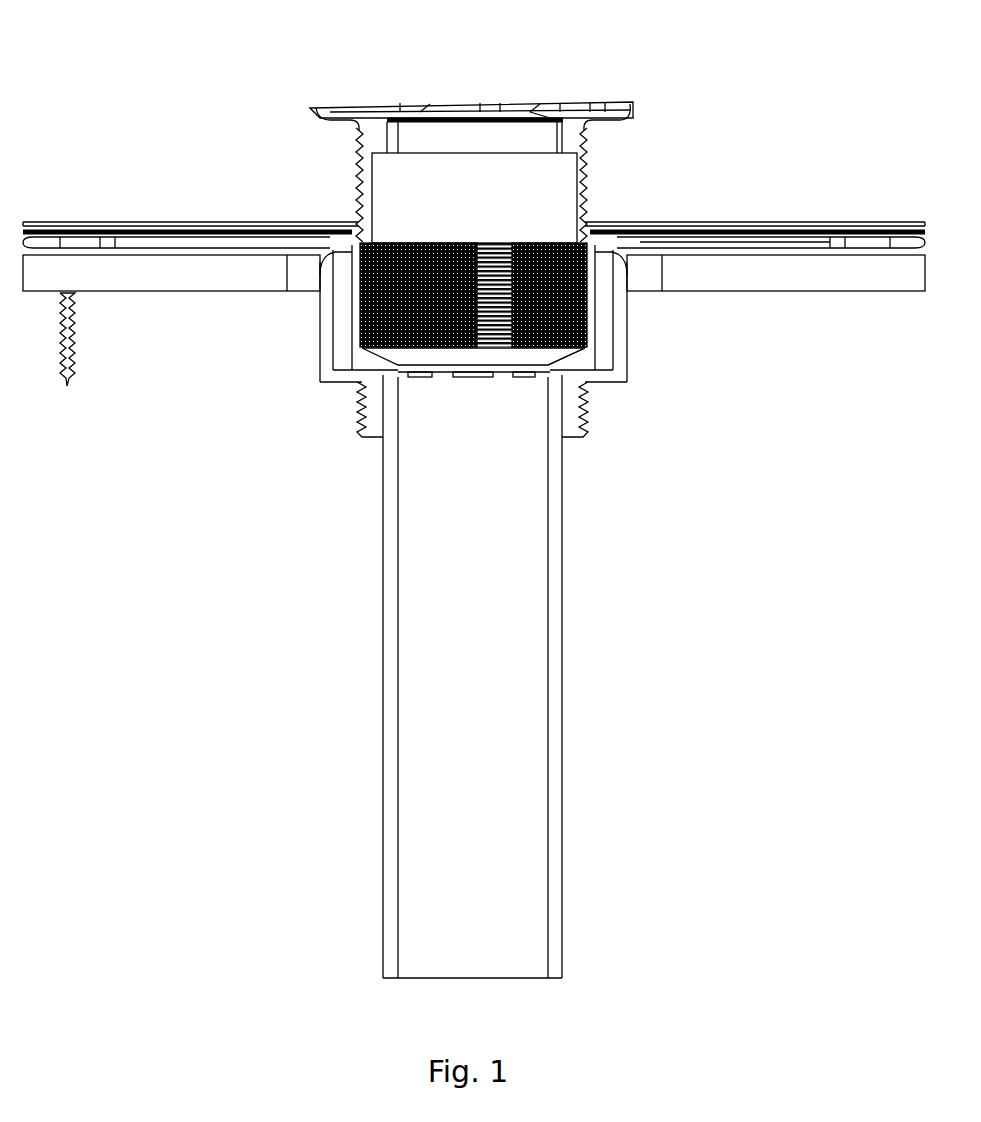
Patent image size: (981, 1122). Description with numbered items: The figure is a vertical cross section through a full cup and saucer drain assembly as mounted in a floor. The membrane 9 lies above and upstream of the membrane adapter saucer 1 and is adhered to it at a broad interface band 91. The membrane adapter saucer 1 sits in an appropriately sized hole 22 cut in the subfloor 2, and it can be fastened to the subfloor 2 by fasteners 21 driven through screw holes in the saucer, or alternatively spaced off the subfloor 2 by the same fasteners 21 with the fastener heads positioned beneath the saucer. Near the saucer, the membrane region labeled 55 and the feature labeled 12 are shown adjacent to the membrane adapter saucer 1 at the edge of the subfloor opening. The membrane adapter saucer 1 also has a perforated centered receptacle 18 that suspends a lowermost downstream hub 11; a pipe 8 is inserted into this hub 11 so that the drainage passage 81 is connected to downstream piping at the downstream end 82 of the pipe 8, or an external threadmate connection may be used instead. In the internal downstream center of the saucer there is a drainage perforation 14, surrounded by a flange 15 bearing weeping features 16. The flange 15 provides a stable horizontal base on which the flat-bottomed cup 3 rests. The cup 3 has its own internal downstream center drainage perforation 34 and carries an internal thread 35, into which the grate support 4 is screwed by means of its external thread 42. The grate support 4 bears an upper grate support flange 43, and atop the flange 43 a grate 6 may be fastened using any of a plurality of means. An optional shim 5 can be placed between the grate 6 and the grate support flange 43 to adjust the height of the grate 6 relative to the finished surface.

The membrane adapter saucer 1 is at (593, 262).
The subfloor 2 is at (729, 270).
The cup 3 is at (312, 222).
The grate support 4 is at (579, 160).
The shim 5 is at (512, 95).
The grate 6 is at (398, 97).
The pipe 8 is at (381, 456).
The membrane 9 is at (797, 233).
The downstream hub 11 is at (372, 425).
The housing lip 12 is at (334, 252).
The drainage perforation 14 is at (432, 380).
The flange 15 is at (578, 361).
The weeping features 16 is at (533, 380).
The perforated centered receptacle 18 is at (338, 347).
The fasteners 21 is at (83, 345).
The hole 22 is at (298, 273).
The center drainage perforation 34 is at (494, 355).
The internal thread 35 is at (372, 245).
The external thread 42 is at (358, 182).
The grate support flange 43 is at (316, 107).
The sealing band 55 is at (105, 232).
The drainage passage 81 is at (428, 556).
The downstream end 82 is at (531, 949).
The interface band 91 is at (753, 245).